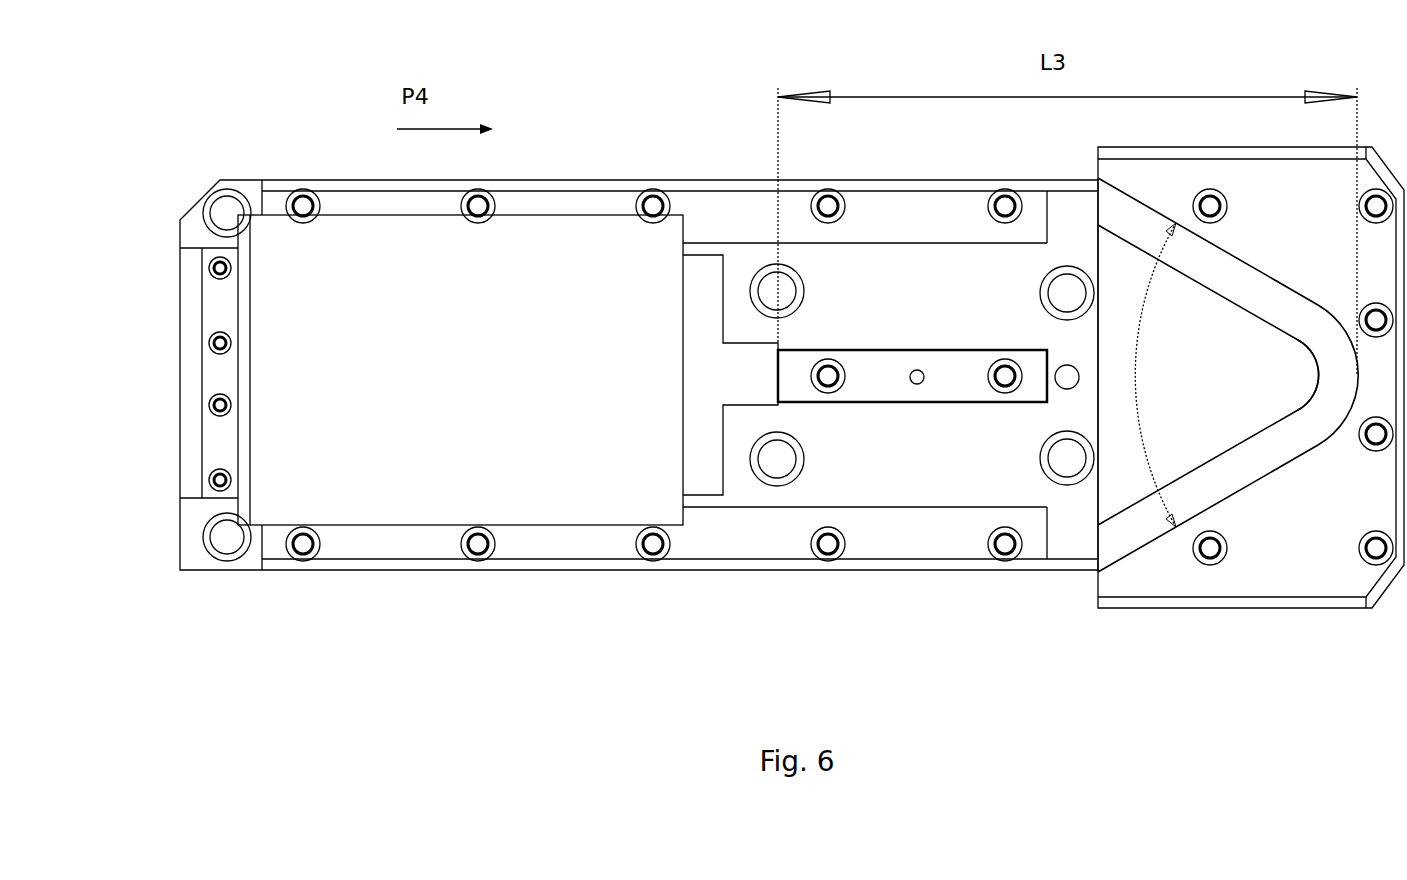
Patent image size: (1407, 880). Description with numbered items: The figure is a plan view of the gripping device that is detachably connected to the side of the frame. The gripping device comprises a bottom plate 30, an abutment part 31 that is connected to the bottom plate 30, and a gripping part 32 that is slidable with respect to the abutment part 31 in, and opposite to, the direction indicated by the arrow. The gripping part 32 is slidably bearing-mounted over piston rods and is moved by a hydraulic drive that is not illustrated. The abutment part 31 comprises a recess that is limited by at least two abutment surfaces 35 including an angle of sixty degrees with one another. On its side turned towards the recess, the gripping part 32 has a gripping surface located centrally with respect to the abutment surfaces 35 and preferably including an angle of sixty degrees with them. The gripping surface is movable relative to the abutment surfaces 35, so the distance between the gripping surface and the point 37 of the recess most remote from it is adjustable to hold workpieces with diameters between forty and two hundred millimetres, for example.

The bottom plate 30 is at (882, 482).
The abutment part 31 is at (1265, 557).
The gripping part 32 is at (403, 492).
The abutment surfaces 35 is at (1265, 263).
The point of the recess most remote from the gripping surface 37 is at (1338, 388).